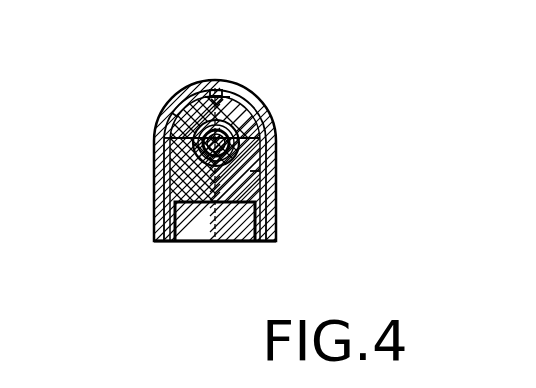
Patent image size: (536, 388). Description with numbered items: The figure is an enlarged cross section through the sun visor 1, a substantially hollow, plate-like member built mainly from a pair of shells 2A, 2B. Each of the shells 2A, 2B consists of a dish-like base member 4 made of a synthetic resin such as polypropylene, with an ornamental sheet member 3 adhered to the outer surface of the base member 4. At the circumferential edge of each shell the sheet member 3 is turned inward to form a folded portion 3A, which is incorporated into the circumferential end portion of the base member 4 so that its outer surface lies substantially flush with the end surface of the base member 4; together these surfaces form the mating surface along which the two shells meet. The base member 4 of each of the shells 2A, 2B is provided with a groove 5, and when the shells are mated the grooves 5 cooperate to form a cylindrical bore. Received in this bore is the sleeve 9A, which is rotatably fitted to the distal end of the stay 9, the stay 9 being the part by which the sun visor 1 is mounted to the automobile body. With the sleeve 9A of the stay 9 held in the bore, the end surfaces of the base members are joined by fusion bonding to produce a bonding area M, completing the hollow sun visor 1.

The sun visor 1 is at (152, 163).
The shell 2A is at (152, 231).
The shell 2B is at (278, 233).
The ornamental sheet member 3 is at (150, 185).
The folded portion 3A is at (185, 88).
The base member 4 is at (240, 203).
The groove 5 is at (270, 148).
The stay 9 is at (160, 138).
The sleeve 9A is at (172, 113).
The bonding area M is at (276, 171).